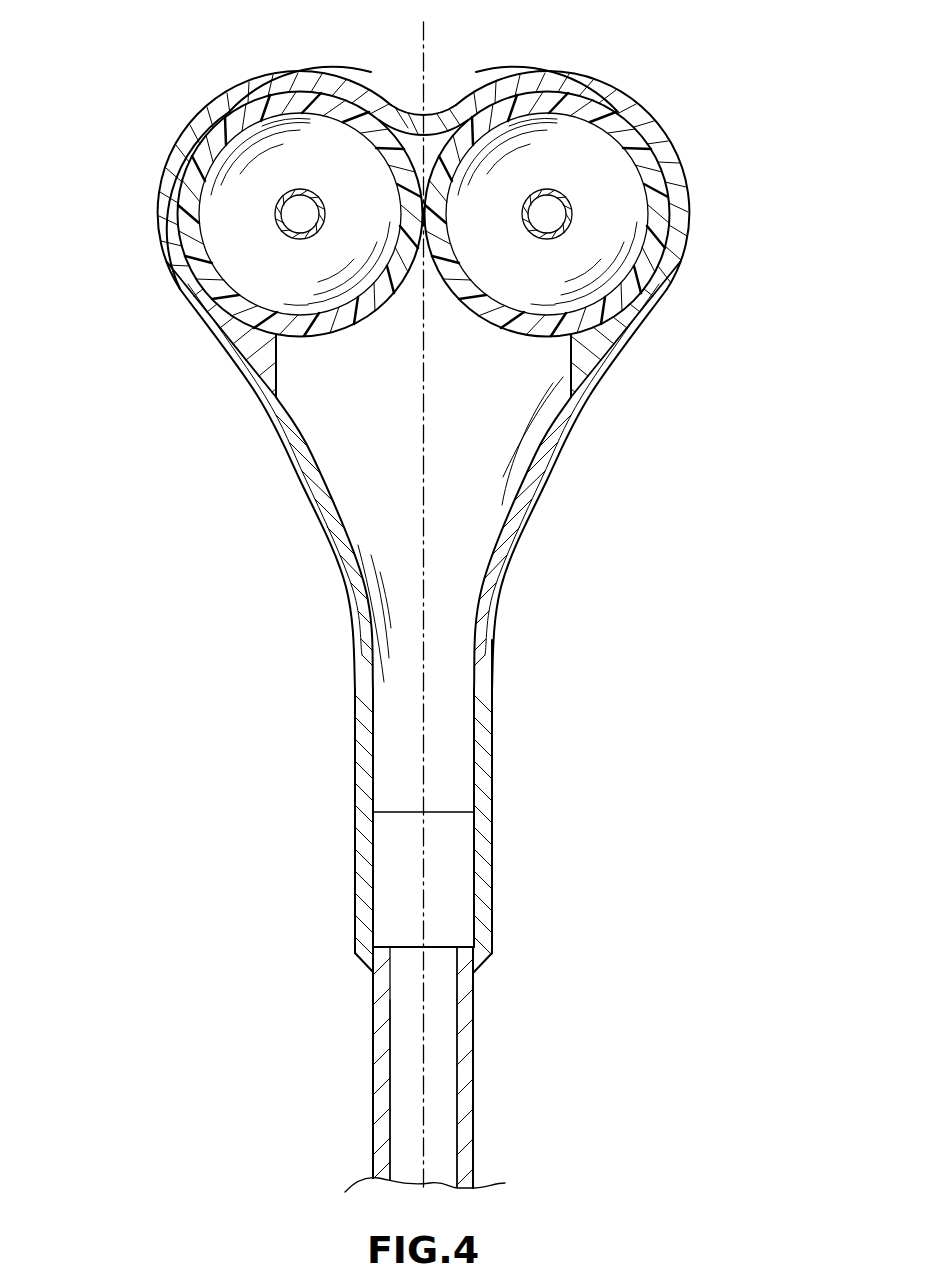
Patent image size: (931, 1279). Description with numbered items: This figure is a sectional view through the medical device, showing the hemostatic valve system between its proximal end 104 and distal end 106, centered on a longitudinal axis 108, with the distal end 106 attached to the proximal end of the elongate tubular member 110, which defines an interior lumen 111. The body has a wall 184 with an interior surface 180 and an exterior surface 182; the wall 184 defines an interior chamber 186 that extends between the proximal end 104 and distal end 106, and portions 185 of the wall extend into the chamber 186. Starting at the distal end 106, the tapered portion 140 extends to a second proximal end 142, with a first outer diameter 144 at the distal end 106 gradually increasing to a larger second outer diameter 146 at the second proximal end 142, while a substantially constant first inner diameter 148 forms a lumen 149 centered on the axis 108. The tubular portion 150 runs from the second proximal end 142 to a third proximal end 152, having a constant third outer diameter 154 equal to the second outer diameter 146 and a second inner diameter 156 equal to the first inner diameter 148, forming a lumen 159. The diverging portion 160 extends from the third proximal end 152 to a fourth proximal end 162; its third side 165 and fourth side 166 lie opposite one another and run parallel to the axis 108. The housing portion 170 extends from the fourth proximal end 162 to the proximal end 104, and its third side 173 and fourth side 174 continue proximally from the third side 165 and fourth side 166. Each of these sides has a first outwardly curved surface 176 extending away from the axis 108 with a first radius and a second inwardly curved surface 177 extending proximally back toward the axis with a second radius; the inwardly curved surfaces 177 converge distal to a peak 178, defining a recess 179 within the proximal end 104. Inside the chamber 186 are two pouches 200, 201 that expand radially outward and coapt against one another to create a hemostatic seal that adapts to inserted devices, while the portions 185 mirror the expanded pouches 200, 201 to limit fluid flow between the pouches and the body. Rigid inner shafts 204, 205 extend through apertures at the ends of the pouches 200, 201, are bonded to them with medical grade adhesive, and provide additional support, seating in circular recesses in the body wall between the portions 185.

The proximal end 104 is at (162, 130).
The distal end 106 is at (205, 1048).
The longitudinal axis 108 is at (423, 850).
The elongate tubular member 110 is at (473, 1078).
The interior lumen 111 is at (440, 1143).
The tapered portion 140 is at (478, 962).
The second proximal end 142 is at (345, 960).
The first outer diameter 144 is at (486, 972).
The second outer diameter 146 is at (493, 957).
The first inner diameter 148 is at (373, 985).
The lumen 149 is at (415, 935).
The tubular portion 150 is at (497, 912).
The third proximal end 152 is at (509, 808).
The third outer diameter 154 is at (497, 876).
The second inner diameter 156 is at (487, 830).
The lumen 159 is at (393, 905).
The diverging portion 160 is at (497, 738).
The fourth proximal end 162 is at (509, 697).
The third side 165 is at (355, 762).
The fourth side 166 is at (497, 770).
The housing portion 170 is at (530, 483).
The third side 173 is at (290, 445).
The fourth side 174 is at (596, 343).
The first outwardly curved surface 176 is at (258, 404).
The second inwardly curved surface 177 is at (217, 100).
The peak 178 is at (298, 72).
The recess 179 is at (450, 85).
The interior surface 180 is at (293, 418).
The exterior surface 182 is at (248, 370).
The wall 184 is at (205, 323).
The portions 185 is at (280, 370).
The interior chamber 186 is at (375, 515).
The pouch 200 is at (630, 222).
The pouch 201 is at (232, 222).
The inner shaft 204 is at (572, 212).
The inner shaft 205 is at (324, 212).